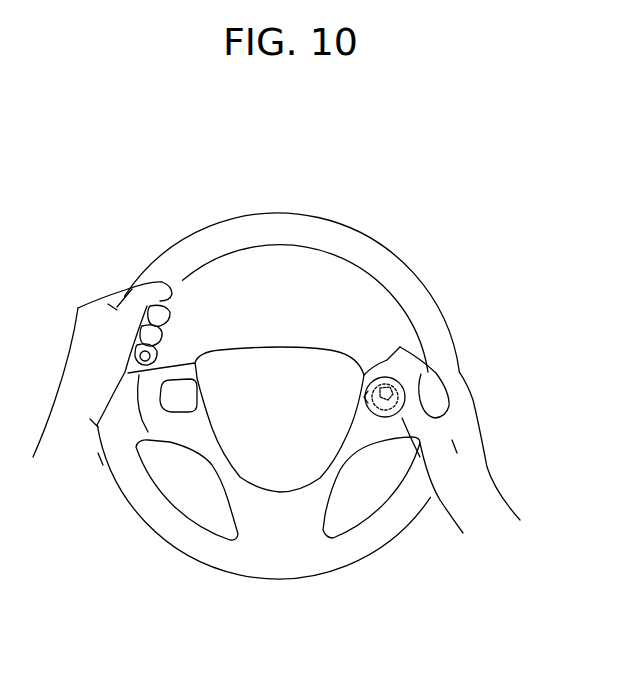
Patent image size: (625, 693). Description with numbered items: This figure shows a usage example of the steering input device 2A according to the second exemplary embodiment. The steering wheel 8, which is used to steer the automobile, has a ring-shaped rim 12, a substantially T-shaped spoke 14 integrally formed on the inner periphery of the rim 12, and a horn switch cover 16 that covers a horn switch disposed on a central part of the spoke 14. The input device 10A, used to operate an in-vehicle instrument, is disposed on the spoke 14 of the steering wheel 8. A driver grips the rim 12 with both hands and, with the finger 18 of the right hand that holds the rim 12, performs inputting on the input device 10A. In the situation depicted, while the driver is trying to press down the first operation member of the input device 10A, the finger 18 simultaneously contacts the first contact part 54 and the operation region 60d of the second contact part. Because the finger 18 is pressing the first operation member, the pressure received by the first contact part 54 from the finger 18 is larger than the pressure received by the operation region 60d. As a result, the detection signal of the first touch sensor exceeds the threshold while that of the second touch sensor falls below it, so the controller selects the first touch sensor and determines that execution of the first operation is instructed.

The steering input device 2A is at (396, 243).
The steering wheel 8 is at (280, 228).
The rim 12 is at (221, 233).
The spoke 14 is at (367, 437).
The horn switch cover 16 is at (281, 460).
The input device 10A is at (400, 347).
The first contact part 54 is at (359, 376).
The operation region 60d is at (422, 378).
The finger 18 is at (415, 392).